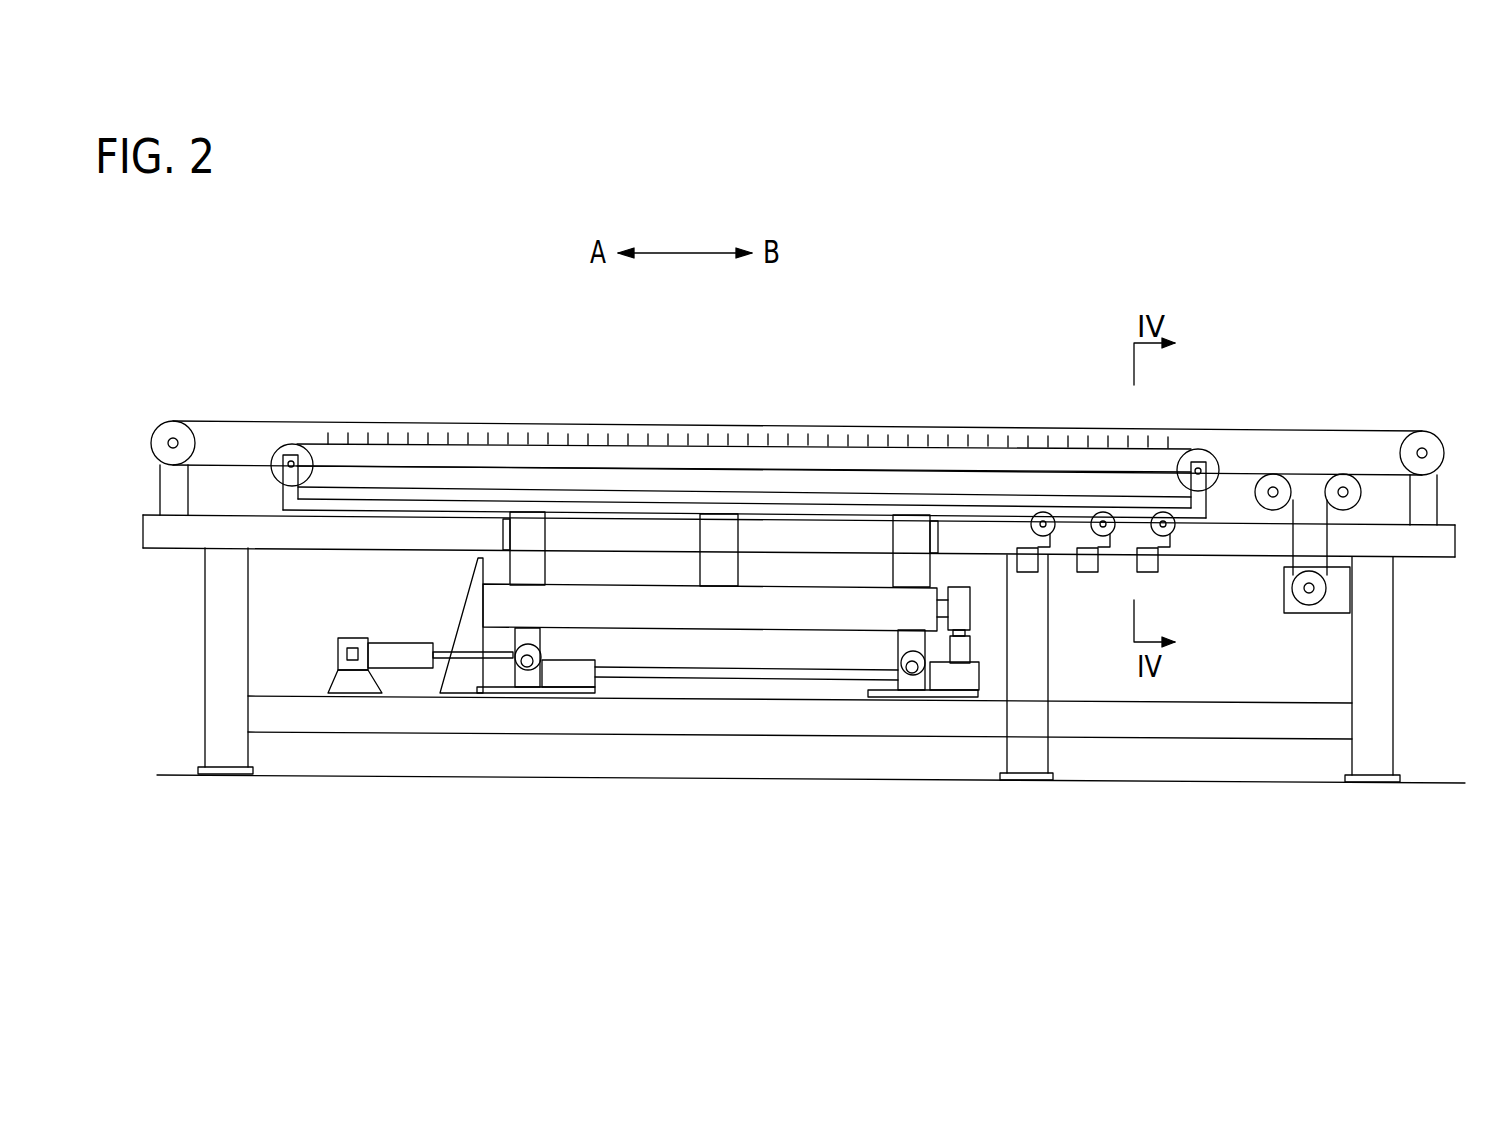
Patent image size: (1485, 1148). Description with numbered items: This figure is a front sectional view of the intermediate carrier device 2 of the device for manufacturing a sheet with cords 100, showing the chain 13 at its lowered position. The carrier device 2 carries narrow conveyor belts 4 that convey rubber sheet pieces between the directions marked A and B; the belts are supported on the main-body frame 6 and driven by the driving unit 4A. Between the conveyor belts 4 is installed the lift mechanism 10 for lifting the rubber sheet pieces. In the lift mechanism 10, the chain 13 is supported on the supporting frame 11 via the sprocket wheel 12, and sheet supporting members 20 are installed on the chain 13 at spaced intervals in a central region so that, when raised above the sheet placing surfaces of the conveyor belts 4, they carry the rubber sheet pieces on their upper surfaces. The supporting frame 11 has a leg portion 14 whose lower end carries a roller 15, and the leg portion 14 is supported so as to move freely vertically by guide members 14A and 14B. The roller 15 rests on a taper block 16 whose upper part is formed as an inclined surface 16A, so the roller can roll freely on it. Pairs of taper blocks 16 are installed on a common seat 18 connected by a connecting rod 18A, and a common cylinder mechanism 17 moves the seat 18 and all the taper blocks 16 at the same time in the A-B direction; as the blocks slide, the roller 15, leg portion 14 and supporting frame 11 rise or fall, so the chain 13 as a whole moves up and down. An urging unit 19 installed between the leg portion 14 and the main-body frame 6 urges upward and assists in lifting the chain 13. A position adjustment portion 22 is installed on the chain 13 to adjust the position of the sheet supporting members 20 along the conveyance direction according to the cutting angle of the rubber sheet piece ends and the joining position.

The device for manufacturing a sheet with cords 100 is at (1052, 352).
The carrier device 2 is at (1341, 418).
The conveyor belt 4 is at (1392, 432).
The driving unit 4A is at (1338, 588).
The main-body frame 6 is at (207, 603).
The lift mechanism 10 is at (814, 724).
The supporting frame 11 is at (330, 490).
The sprocket wheel 12 is at (290, 445).
The chain 13 is at (398, 445).
The leg portion 14 is at (537, 535).
The guide member 14A is at (503, 537).
The guide member 14B is at (450, 627).
The roller 15 is at (533, 657).
The taper block 16 is at (583, 673).
The inclined surface 16A is at (525, 675).
The cylinder mechanism 17 is at (400, 660).
The seat 18 is at (514, 668).
The connecting rod 18A is at (740, 680).
The urging unit 19 is at (967, 645).
The sheet supporting member 20 is at (487, 445).
The position adjustment portion 22 is at (1150, 565).